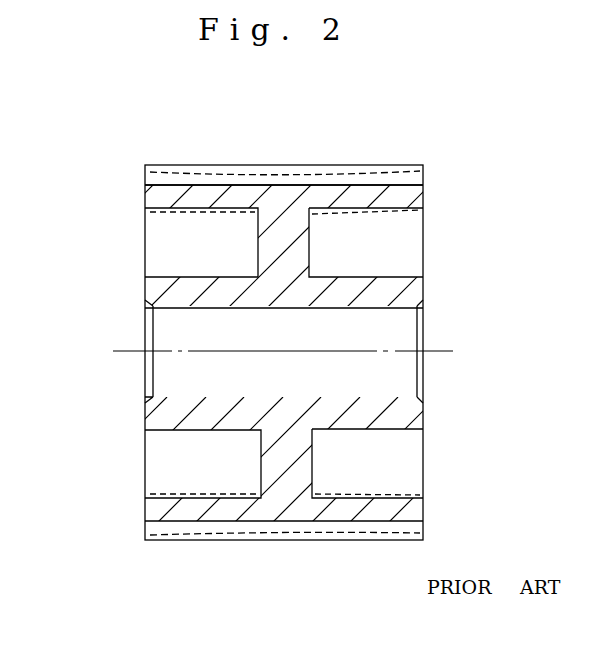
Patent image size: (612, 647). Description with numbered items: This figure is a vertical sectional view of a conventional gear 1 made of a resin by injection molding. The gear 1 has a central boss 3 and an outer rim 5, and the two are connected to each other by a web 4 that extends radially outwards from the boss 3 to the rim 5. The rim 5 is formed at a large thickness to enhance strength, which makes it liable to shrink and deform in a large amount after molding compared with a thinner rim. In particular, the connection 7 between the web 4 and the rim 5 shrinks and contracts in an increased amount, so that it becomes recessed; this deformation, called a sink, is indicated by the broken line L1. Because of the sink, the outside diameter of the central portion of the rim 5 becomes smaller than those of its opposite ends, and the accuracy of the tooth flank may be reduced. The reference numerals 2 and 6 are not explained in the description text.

The gear 1 is at (423, 182).
The bore / shaft hole 2 is at (340, 376).
The boss 3 is at (392, 292).
The web 4 is at (310, 247).
The rim 5 is at (402, 197).
The insulating coating 6 is at (160, 174).
The connection 7 is at (258, 235).
The broken line L1 is at (310, 173).